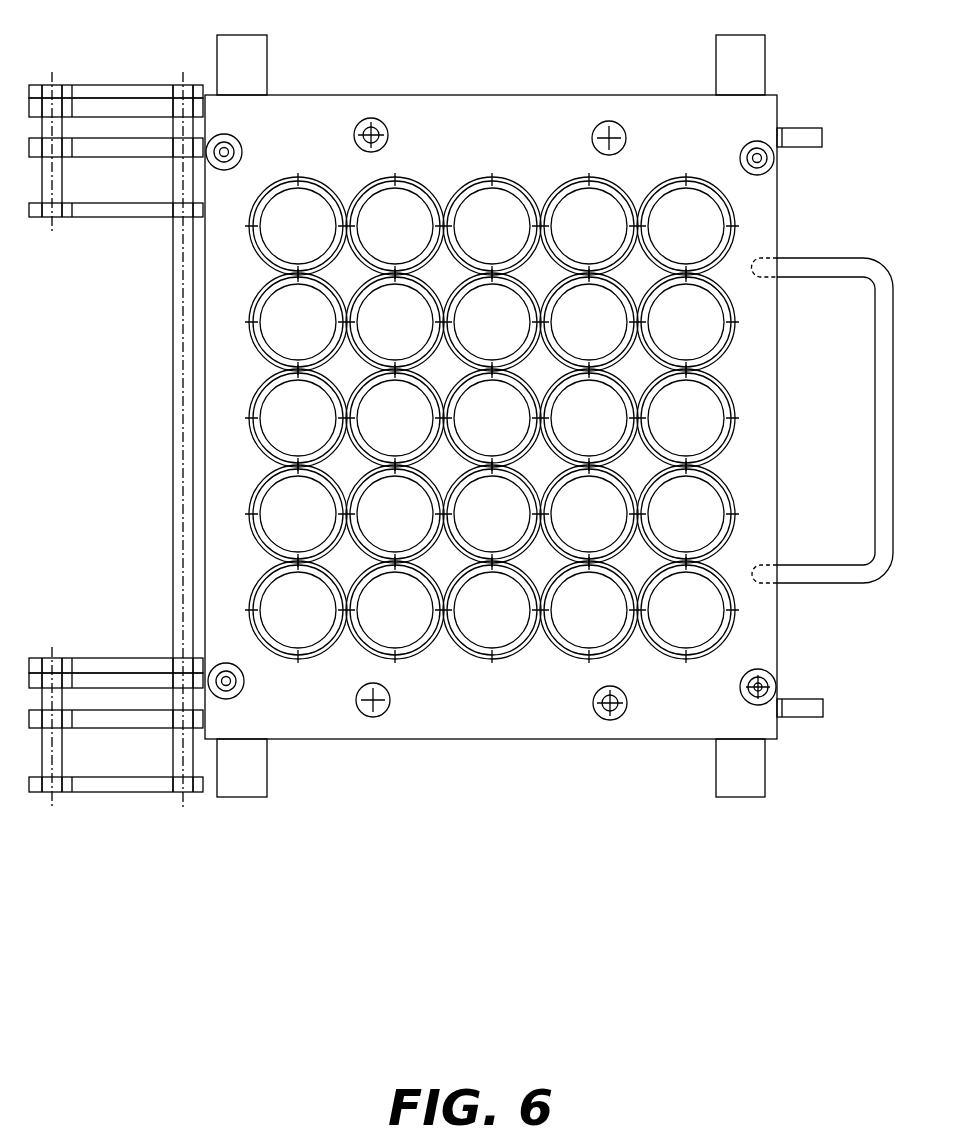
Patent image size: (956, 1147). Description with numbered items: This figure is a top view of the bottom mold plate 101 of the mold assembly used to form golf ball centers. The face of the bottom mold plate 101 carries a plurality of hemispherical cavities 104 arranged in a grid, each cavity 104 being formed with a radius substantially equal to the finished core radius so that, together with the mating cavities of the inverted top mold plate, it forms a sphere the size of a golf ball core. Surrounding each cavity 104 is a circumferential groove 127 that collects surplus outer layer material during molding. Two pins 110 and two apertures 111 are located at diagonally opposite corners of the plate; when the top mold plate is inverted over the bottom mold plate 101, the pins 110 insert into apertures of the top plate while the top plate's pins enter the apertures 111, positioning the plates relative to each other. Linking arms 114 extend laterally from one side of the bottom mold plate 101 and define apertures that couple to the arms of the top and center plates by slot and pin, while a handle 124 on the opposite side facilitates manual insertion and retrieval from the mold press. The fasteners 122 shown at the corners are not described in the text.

The bottom mold plate 101 is at (486, 64).
The hemispherical cavity 104 is at (300, 222).
The circumferential groove 127 is at (328, 181).
The pin 110 is at (386, 145).
The aperture 111 is at (622, 147).
The fastener 122 is at (226, 171).
The linking arm 114 is at (91, 232).
The handle 124 is at (837, 584).